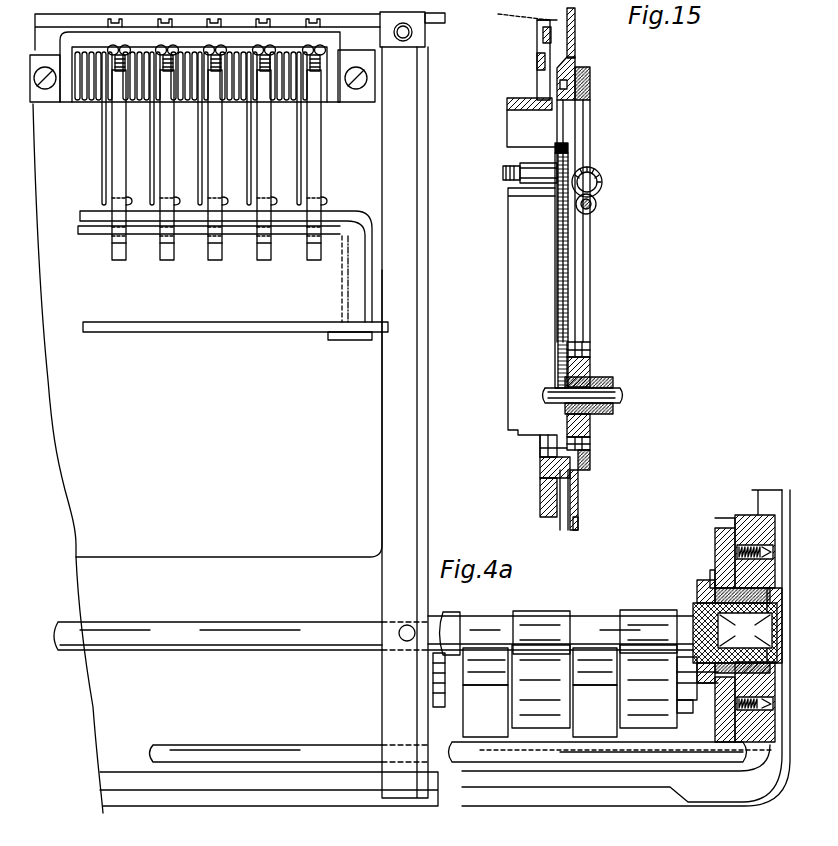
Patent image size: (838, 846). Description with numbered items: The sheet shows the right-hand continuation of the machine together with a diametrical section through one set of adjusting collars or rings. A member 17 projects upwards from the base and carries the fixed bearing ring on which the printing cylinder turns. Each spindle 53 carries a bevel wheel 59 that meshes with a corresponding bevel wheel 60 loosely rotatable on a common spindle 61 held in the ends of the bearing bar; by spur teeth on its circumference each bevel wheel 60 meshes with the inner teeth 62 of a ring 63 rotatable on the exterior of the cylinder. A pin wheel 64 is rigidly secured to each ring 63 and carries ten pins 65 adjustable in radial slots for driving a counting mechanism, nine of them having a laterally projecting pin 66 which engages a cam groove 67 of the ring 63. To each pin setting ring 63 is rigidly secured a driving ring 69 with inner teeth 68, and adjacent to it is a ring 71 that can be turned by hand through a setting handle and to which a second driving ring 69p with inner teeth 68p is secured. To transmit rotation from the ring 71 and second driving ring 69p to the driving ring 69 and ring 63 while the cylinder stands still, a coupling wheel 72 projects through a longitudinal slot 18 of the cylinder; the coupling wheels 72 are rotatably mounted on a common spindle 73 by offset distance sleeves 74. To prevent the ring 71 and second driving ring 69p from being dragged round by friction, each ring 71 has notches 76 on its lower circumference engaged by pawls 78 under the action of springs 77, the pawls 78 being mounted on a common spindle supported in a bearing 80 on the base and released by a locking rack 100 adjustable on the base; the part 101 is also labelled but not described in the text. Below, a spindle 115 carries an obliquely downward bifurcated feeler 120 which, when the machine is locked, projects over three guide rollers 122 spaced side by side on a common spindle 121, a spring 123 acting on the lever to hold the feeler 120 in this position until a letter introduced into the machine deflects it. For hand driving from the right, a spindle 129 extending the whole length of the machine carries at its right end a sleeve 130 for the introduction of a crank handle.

In FIG. 4A, the member 17 is at (427, 333).
In FIG. 15, the longitudinal slot 18 is at (507, 150).
In FIG. 15, the spindle 53 is at (597, 205).
In FIG. 15, the bevel wheel 59 is at (600, 186).
In FIG. 15, the bevel wheel 60 is at (540, 170).
In FIG. 15, the common spindle 61 is at (503, 174).
In FIG. 15, the inner teeth 62 is at (555, 283).
In FIG. 15, the ring 63 is at (576, 50).
In FIG. 15, the pin wheel 64 is at (543, 36).
In FIG. 15, the pin 65 is at (517, 12).
In FIG. 15, the pin 66 is at (560, 85).
In FIG. 15, the cam groove 67 is at (537, 80).
In FIG. 15, the inner teeth 68 is at (540, 448).
In FIG. 15, the inner teeth 68p is at (590, 445).
In FIG. 15, the driving ring 69 is at (576, 108).
In FIG. 15, the second driving ring 69p is at (590, 82).
In FIG. 15, the ring 71 is at (576, 20).
In FIG. 15, the transmission or coupling wheel 72 is at (590, 347).
In FIG. 15, the common spindle 73 is at (612, 392).
In FIG. 15, the offset distance sleeve 74 is at (613, 410).
In FIG. 15, the notch 76 is at (578, 521).
In FIG. 4A, the spring 77 is at (104, 172).
In FIG. 4A, the pawl 78 is at (117, 143).
In FIG. 4A, the bearing 80 is at (70, 48).
In FIG. 4A, the locking rack 100 is at (183, 229).
In FIG. 4A, the lower bar 101 is at (98, 327).
In FIG. 4A, the spindle 115 is at (316, 752).
In FIG. 4A, the bifurcated feeler 120 is at (575, 708).
In FIG. 4A, the common spindle 121 is at (615, 686).
In FIG. 4A, the guide roller 122 is at (466, 609).
In FIG. 4A, the spring 123 is at (680, 757).
In FIG. 4A, the spindle 129 is at (261, 640).
In FIG. 4A, the sleeve 130 is at (737, 616).